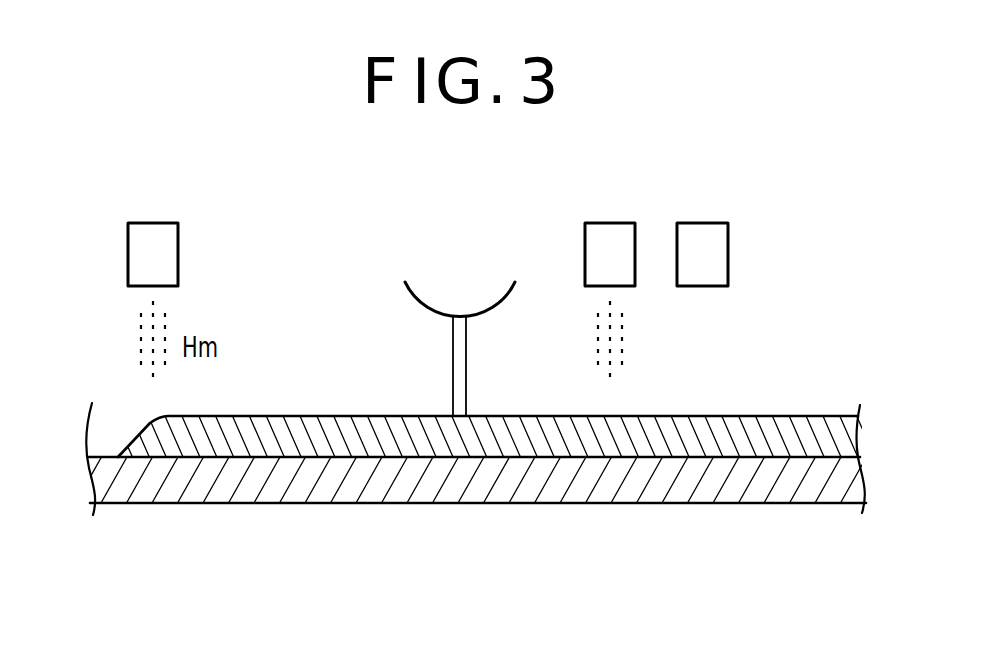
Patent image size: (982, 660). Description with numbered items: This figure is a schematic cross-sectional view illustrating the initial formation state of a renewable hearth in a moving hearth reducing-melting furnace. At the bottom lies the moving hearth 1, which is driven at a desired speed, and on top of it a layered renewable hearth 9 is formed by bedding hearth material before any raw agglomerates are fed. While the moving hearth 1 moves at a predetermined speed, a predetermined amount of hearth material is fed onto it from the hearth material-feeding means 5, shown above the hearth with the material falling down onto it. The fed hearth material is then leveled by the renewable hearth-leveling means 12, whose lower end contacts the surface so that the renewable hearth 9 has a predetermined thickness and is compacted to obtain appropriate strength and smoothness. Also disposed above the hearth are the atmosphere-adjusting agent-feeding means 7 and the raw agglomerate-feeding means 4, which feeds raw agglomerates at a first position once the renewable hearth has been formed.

The moving hearth 1 is at (133, 482).
The renewable hearth 9 is at (148, 449).
The hearth material-feeding means 5 is at (155, 223).
The atmosphere-adjusting agent-feeding means 7 is at (610, 223).
The raw agglomerate-feeding means 4 is at (703, 223).
The renewable hearth-leveling means 12 is at (460, 345).